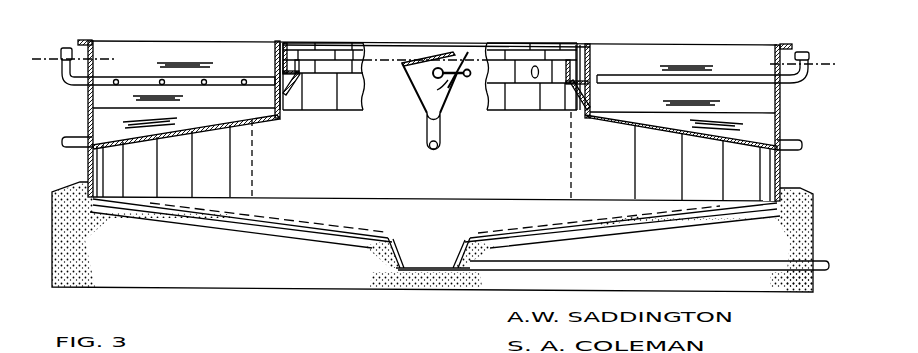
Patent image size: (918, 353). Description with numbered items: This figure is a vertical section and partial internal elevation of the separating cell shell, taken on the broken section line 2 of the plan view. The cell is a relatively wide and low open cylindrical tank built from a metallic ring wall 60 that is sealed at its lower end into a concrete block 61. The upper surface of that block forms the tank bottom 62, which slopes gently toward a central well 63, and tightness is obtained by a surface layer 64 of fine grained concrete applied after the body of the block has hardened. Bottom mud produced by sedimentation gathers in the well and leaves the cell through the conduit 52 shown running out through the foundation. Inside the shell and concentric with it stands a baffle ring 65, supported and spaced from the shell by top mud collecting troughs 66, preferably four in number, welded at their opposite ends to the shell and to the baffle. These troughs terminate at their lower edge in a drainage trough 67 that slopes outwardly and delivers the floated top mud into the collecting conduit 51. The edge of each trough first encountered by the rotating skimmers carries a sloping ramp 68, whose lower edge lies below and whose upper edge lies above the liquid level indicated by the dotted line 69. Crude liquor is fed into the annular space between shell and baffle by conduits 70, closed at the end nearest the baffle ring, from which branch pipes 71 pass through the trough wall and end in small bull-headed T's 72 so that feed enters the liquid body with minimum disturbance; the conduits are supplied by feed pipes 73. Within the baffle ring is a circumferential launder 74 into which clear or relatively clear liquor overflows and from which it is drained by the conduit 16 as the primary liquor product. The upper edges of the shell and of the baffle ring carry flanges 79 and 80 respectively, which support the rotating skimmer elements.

The section line of Fig. 2 is at (43, 49).
The conduit 16 is at (531, 72).
The collecting conduit 51 is at (62, 140).
The conduit 52 is at (698, 249).
The metallic ring wall 60 is at (89, 156).
The concrete block 61 is at (228, 282).
The tank bottom 62 is at (357, 210).
The central well 63 is at (437, 227).
The surface layer 64 is at (612, 233).
The baffle ring 65 is at (352, 104).
The top mud collecting trough 66 is at (100, 98).
The drainage trough 67 is at (100, 123).
The sloping ramp 68 is at (440, 53).
The liquid level 69 is at (388, 58).
The conduit 70 is at (214, 88).
The branch pipe 71 is at (244, 86).
The T 72 is at (466, 78).
The feed pipe 73 is at (60, 67).
The circumferential launder 74 is at (302, 52).
The flange 79 is at (89, 41).
The flange 80 is at (290, 43).